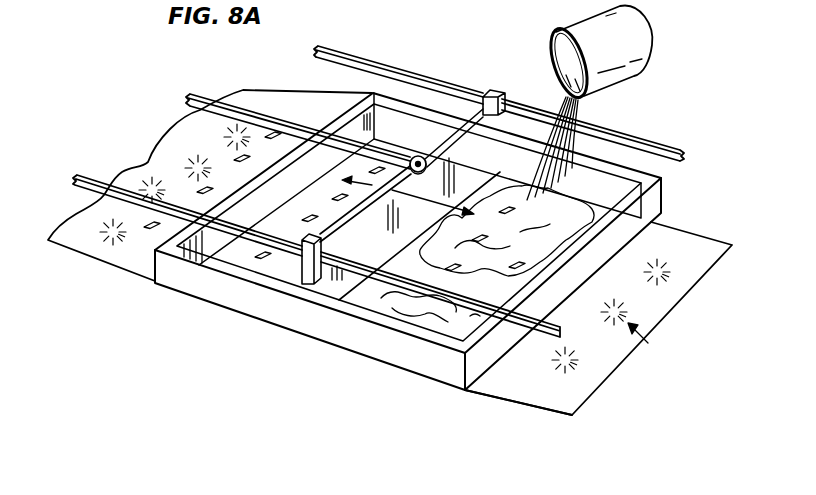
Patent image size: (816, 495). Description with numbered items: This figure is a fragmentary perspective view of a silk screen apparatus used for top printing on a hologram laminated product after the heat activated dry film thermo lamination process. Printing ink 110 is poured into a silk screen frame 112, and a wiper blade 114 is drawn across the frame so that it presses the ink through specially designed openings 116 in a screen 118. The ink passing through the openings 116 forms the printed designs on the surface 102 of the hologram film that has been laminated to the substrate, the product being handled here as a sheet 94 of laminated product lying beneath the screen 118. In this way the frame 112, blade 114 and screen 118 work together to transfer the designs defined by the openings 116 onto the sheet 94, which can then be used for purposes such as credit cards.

The sheet 94 is at (529, 401).
The surface 102 is at (681, 243).
The printing ink 110 is at (573, 112).
The silk screen frame 112 is at (300, 320).
The wiper blade 114 is at (485, 172).
The openings 116 is at (258, 258).
The screen 118 is at (230, 253).